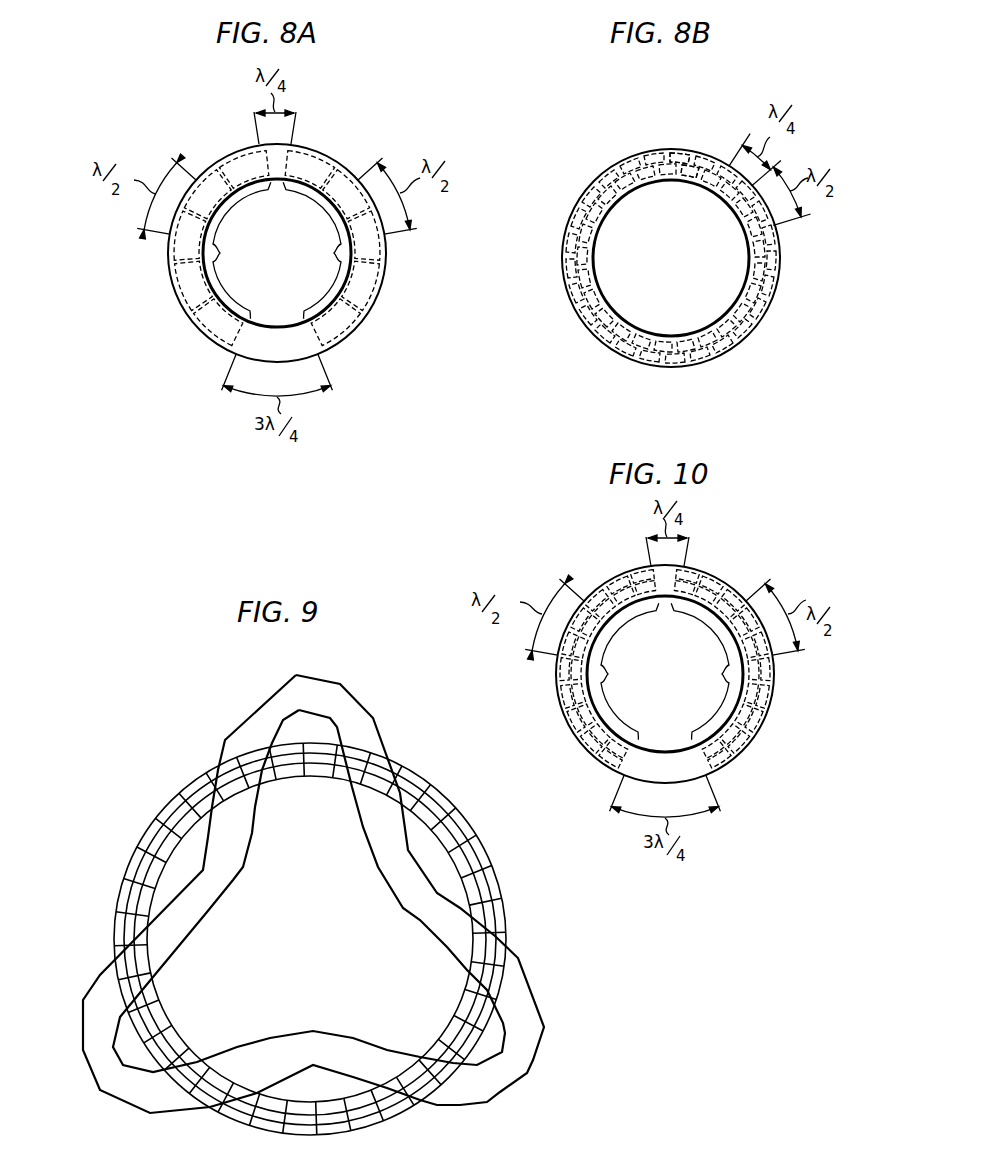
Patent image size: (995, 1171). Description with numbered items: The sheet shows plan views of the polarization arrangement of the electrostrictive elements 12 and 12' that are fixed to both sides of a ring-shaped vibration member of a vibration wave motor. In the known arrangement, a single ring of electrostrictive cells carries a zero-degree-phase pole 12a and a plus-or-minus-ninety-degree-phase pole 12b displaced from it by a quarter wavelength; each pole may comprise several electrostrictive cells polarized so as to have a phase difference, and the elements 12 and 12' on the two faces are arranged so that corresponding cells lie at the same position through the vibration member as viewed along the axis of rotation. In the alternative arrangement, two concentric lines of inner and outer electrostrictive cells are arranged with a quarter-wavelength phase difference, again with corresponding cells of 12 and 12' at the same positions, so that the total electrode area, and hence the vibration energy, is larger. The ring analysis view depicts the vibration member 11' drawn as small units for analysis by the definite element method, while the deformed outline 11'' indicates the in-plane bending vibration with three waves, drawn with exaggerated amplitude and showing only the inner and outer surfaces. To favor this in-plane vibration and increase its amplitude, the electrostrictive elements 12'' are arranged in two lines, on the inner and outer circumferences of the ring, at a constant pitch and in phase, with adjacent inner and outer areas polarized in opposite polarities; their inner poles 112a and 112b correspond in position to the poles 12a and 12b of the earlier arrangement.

In FIG. 9, the vibration member 11' is at (322, 939).
In FIG. 9, the in-plane bending vibration 11'' is at (313, 894).
In FIG. 8A, the electrostrictive element 12 is at (308, 262).
In FIG. 8B, the electrostrictive element 12 is at (647, 263).
In FIG. 8A, the electrostrictive element 12' is at (302, 258).
In FIG. 8B, the electrostrictive element 12' is at (664, 261).
In FIG. 10, the electrostrictive elements 12'' is at (683, 674).
In FIG. 8A, the 0°-phase pole 12a is at (312, 250).
In FIG. 8B, the 0°-phase pole 12a is at (685, 140).
In FIG. 8A, the ±90°-phase pole 12b is at (242, 250).
In FIG. 8B, the ±90°-phase pole 12b is at (683, 194).
In FIG. 10, the electrode 112a is at (700, 671).
In FIG. 10, the electrode 112b is at (630, 671).